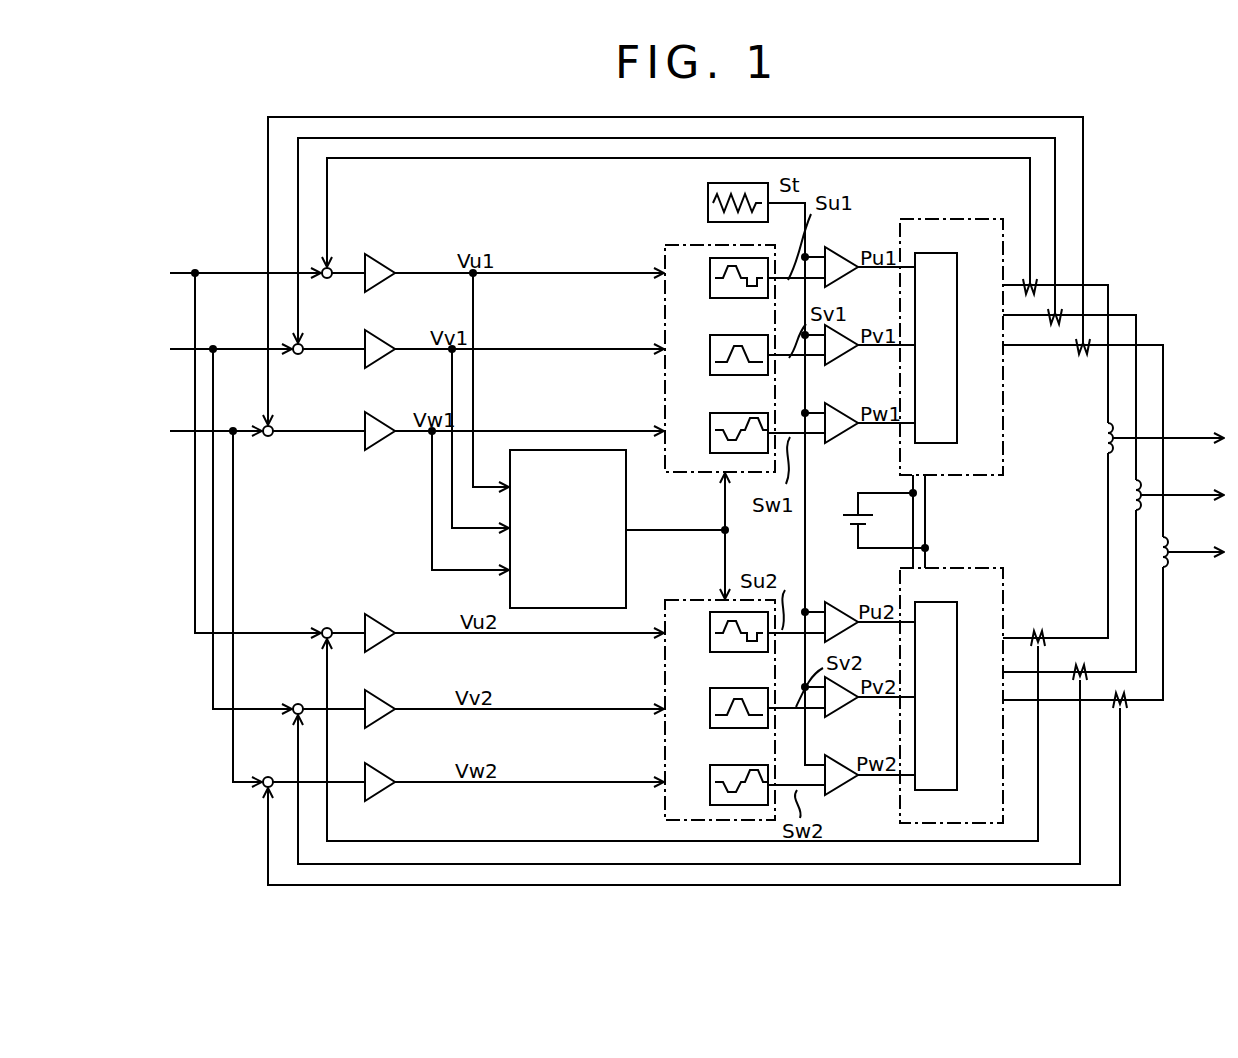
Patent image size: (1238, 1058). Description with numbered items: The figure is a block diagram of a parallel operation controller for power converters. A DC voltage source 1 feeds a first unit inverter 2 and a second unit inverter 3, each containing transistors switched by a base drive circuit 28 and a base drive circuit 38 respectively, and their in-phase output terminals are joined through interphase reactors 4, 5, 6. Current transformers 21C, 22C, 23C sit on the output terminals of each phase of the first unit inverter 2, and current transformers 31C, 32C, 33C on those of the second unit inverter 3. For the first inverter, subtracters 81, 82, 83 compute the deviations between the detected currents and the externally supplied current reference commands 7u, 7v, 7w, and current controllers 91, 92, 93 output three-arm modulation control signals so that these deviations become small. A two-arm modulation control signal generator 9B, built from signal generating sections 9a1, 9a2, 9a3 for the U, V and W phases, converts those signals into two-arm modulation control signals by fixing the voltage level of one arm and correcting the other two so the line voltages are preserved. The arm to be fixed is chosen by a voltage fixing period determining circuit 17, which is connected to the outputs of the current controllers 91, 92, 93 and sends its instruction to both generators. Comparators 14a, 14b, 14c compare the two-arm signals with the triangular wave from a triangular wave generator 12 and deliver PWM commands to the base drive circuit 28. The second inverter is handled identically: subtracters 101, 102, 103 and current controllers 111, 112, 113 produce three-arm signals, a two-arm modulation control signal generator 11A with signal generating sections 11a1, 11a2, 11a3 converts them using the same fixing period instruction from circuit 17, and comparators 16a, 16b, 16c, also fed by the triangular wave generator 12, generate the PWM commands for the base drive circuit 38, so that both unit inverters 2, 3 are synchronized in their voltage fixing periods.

The current reference command 7u is at (185, 271).
The current reference command 7v is at (177, 348).
The current reference command 7w is at (177, 430).
The subtracter 81 is at (327, 280).
The subtracter 82 is at (298, 356).
The subtracter 83 is at (268, 437).
The current controller 91 is at (387, 262).
The current controller 92 is at (388, 339).
The current controller 93 is at (387, 420).
The two-arm modulation control signal generator 9B is at (665, 259).
The signal generating section 9a1 is at (710, 283).
The signal generating section 9a2 is at (710, 355).
The signal generating section 9a3 is at (710, 433).
The subtracter 101 is at (324, 628).
The subtracter 102 is at (296, 704).
The subtracter 103 is at (267, 777).
The current controller 111 is at (385, 618).
The current controller 112 is at (389, 692).
The current controller 113 is at (384, 767).
The two-arm modulation control signal generator 11A is at (705, 598).
The signal generating section 11a1 is at (710, 640).
The signal generating section 11a2 is at (710, 710).
The signal generating section 11a3 is at (710, 783).
The triangular wave generator 12 is at (708, 203).
The comparator 14a is at (837, 265).
The comparator 14b is at (838, 332).
The comparator 14c is at (837, 412).
The comparator 16a is at (837, 608).
The comparator 16b is at (847, 715).
The comparator 16c is at (846, 788).
The voltage fixing period determining circuit 17 is at (628, 501).
The DC voltage source 1 is at (847, 508).
The first unit inverter 2 is at (911, 217).
The base drive circuit 28 is at (940, 253).
The second unit inverter 3 is at (938, 566).
The base drive circuit 38 is at (950, 602).
The interphase reactor 4 is at (1100, 439).
The interphase reactor 5 is at (1128, 495).
The interphase reactor 6 is at (1158, 552).
The current transformer 21C is at (1032, 282).
The current transformer 22C is at (1057, 312).
The current transformer 23C is at (1082, 350).
The current transformer 31C is at (1040, 633).
The current transformer 32C is at (1090, 668).
The current transformer 33C is at (1128, 706).